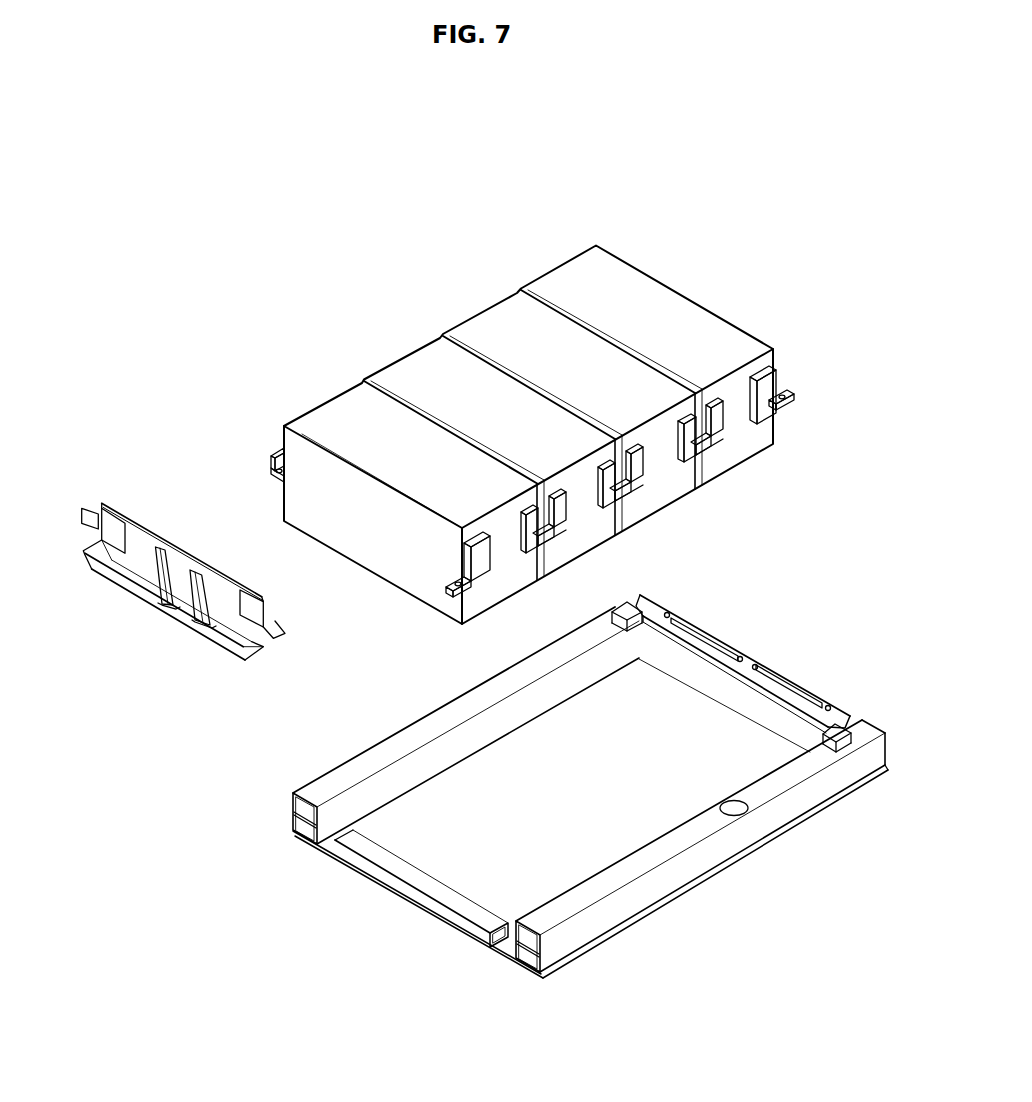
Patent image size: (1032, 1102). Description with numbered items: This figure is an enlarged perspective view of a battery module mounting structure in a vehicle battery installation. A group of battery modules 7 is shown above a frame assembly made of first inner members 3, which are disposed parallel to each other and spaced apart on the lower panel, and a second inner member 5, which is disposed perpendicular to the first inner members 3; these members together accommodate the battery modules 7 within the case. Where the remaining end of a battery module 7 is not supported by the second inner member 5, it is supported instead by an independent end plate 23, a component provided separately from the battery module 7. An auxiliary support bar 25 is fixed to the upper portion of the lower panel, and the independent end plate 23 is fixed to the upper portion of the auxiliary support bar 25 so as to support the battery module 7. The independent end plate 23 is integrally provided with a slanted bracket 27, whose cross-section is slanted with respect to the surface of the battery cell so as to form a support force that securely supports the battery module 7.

The battery module 7 is at (403, 347).
The first inner member 3 is at (427, 730).
The second inner member 5 is at (752, 652).
The independent end plate 23 is at (174, 545).
The auxiliary support bar 25 is at (398, 866).
The slanted bracket 27 is at (180, 577).